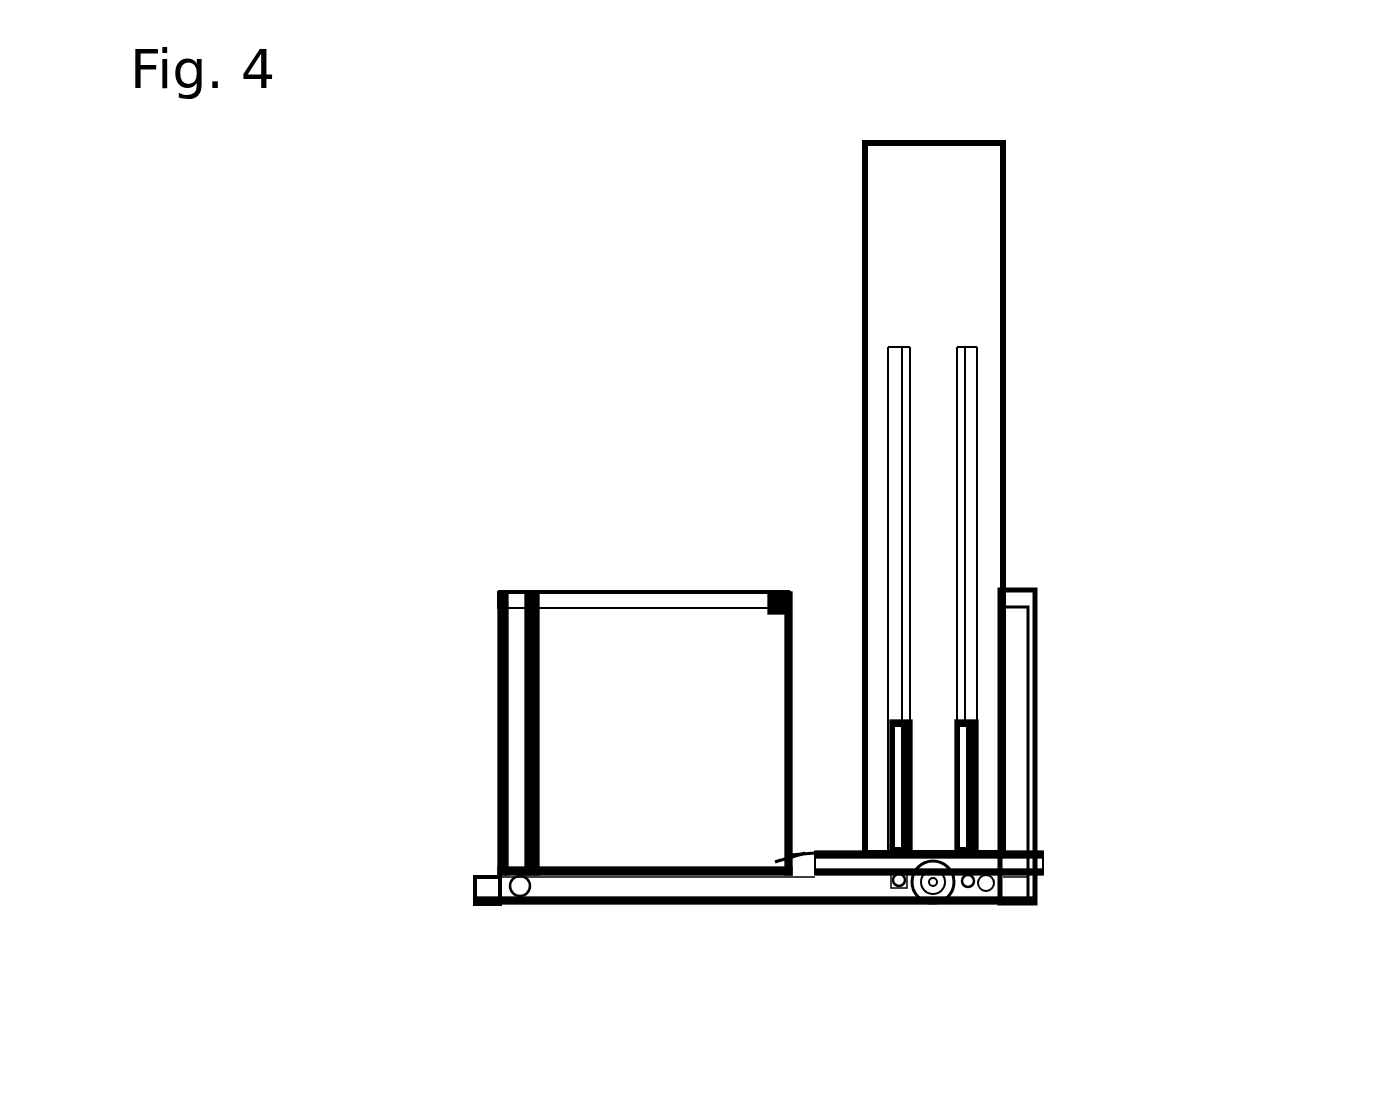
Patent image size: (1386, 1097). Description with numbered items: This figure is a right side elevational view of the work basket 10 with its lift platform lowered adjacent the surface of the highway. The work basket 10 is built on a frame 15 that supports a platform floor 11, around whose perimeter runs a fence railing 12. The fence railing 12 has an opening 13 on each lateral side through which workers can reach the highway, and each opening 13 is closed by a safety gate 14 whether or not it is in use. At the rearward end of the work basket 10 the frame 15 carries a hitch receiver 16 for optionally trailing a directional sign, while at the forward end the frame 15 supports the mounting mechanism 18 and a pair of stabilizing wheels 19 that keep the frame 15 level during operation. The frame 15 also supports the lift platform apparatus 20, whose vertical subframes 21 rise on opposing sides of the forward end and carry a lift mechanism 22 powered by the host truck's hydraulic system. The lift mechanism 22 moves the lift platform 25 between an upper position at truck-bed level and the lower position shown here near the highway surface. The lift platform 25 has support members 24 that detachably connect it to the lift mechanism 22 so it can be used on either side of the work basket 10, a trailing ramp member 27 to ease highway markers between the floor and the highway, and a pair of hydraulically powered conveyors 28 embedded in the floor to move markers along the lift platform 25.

The work basket 10 is at (640, 322).
The platform floor 11 is at (685, 853).
The fence railing 12 is at (497, 603).
The opening 13 is at (574, 643).
The safety gate 14 is at (572, 598).
The frame 15 is at (527, 903).
The hitch receiver 16 is at (485, 890).
The mounting mechanism 18 is at (1093, 778).
The stabilizing wheel 19 is at (945, 900).
The lift platform apparatus 20 is at (1046, 480).
The subframe 21 is at (970, 290).
The lift mechanism 22 is at (975, 740).
The support member 24 is at (898, 888).
The lift platform 25 is at (1045, 868).
The trailing ramp member 27 is at (787, 852).
The conveyor 28 is at (853, 850).